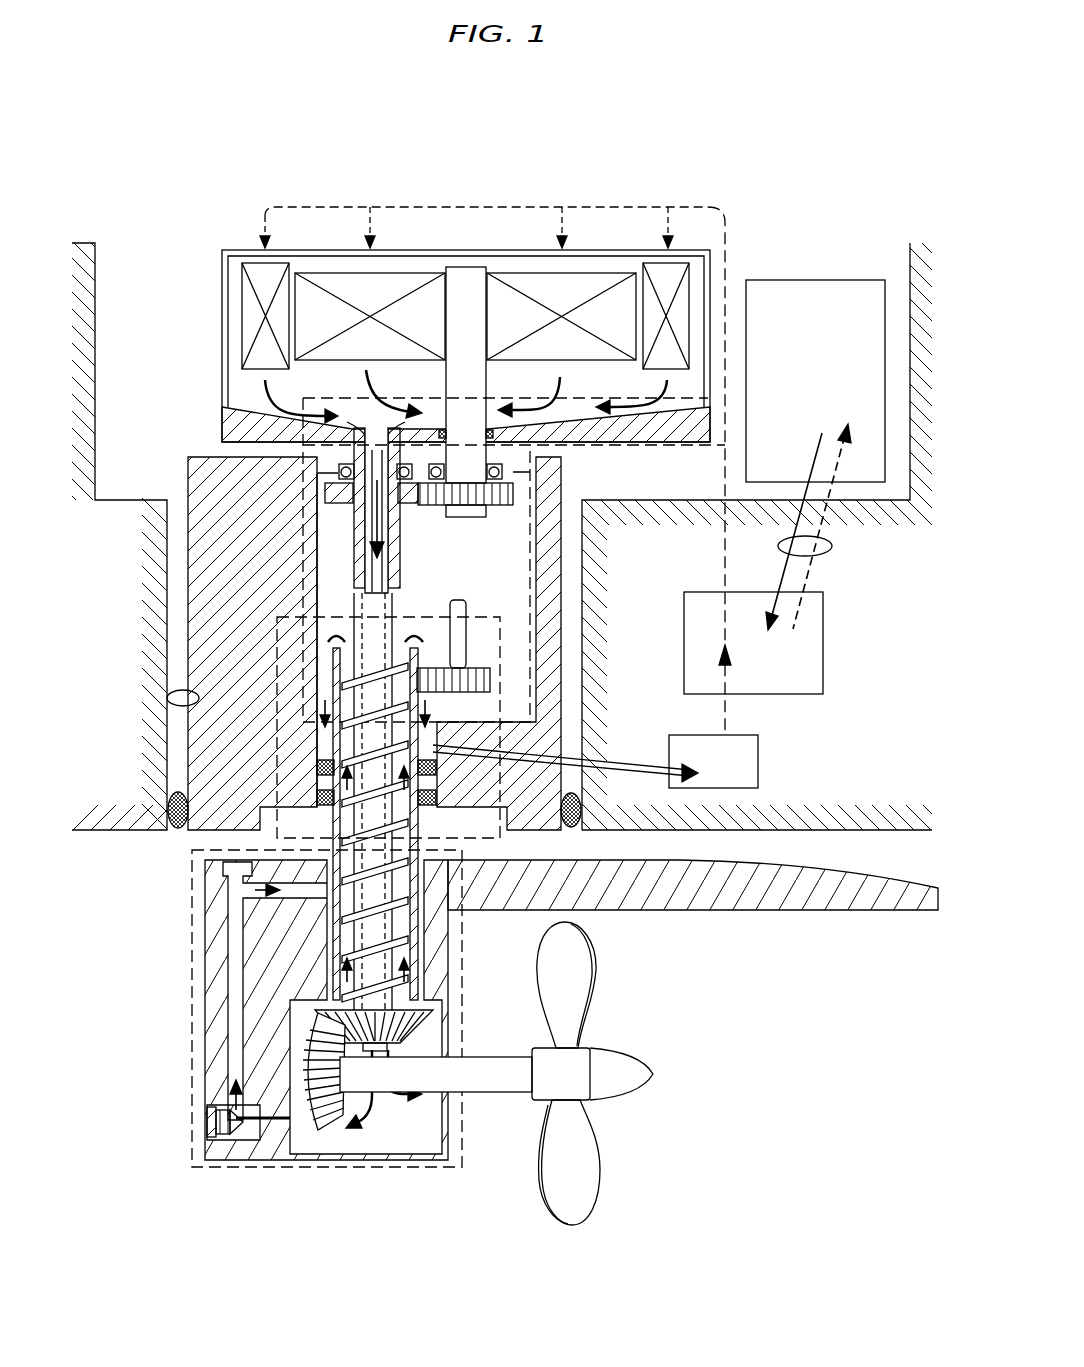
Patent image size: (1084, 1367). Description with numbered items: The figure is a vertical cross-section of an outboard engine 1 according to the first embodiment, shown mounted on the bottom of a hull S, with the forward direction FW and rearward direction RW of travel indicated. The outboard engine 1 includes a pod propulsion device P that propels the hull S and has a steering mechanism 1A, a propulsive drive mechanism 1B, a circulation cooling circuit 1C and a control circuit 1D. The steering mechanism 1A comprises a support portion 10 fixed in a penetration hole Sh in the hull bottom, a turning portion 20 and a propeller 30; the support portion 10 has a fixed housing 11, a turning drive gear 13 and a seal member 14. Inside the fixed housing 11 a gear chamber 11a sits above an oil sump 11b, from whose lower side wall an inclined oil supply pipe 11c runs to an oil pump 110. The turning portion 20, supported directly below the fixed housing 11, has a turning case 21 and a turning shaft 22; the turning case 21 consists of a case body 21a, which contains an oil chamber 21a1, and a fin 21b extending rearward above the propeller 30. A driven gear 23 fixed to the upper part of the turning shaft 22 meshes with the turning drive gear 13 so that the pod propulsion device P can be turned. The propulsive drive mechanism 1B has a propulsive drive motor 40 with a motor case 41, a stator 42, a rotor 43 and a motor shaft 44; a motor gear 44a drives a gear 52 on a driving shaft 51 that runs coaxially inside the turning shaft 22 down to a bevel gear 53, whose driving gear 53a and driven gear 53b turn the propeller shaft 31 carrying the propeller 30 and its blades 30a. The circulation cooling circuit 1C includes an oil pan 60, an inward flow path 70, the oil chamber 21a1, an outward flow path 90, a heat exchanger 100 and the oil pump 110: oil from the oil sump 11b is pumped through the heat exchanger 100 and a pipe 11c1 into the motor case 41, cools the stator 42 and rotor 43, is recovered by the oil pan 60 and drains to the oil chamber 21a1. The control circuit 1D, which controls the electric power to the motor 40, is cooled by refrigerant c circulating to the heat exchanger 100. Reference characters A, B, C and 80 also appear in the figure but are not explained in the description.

The outboard engine 1 is at (200, 118).
The steering mechanism 1A is at (222, 1153).
The propulsive drive mechanism 1B is at (344, 205).
The circulation cooling circuit 1C is at (440, 948).
The control circuit 1D is at (850, 278).
The support portion 10 is at (187, 482).
The fixed housing 11 is at (185, 742).
The gear chamber 11a is at (497, 592).
The oil sump 11b is at (325, 752).
The oil supply pipe 11c is at (620, 775).
The pipe 11c1 is at (702, 203).
The turning drive gear 13 is at (498, 688).
The seal member 14 is at (175, 835).
The turning portion 20 is at (433, 1153).
The turning case 21 is at (205, 1035).
The case body 21a is at (234, 1153).
The oil chamber 21a1 is at (355, 1135).
The fin 21b is at (765, 912).
The turning shaft 22 is at (330, 812).
The driven gear 23 is at (323, 688).
The propeller 30 is at (620, 1107).
The blades 30a is at (572, 1228).
The propeller shaft 31 is at (500, 1064).
The propulsive drive motor 40 is at (522, 272).
The motor case 41 is at (221, 332).
The stator 42 is at (700, 282).
The rotor 43 is at (620, 270).
The motor shaft 44 is at (448, 270).
The motor gear 44a is at (503, 508).
The driving shaft 51 is at (357, 948).
The gear 52 is at (327, 494).
The bevel gear 53 is at (386, 1146).
The driving gear 53a is at (408, 1043).
The driven gear 53b is at (352, 1100).
The oil pan 60 is at (257, 408).
The inward flow path 70 is at (558, 402).
The gear chamber 80 is at (420, 1128).
The outward flow path 90 is at (437, 818).
The heat exchanger 100 is at (823, 650).
The oil pump 110 is at (758, 764).
The region A is at (303, 548).
The region B is at (317, 668).
The region C is at (192, 1112).
The pod propulsion device P is at (205, 1012).
The hull S is at (817, 832).
The penetration hole Sh is at (170, 700).
The forward direction FW is at (172, 1075).
The rearward direction RW is at (822, 1075).
The refrigerant c is at (832, 548).